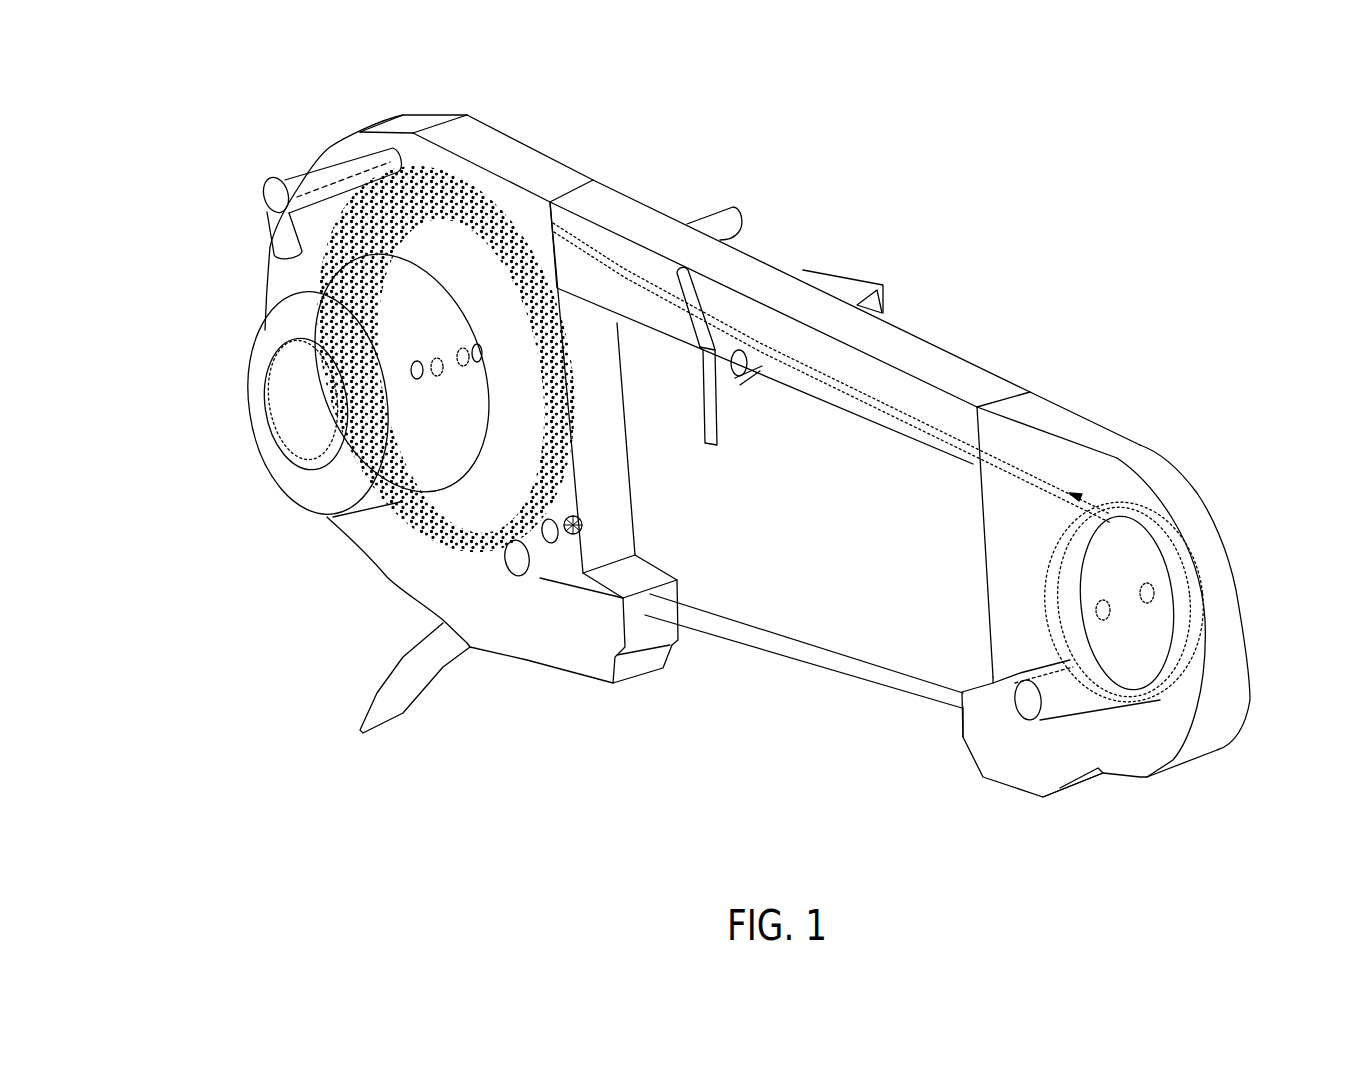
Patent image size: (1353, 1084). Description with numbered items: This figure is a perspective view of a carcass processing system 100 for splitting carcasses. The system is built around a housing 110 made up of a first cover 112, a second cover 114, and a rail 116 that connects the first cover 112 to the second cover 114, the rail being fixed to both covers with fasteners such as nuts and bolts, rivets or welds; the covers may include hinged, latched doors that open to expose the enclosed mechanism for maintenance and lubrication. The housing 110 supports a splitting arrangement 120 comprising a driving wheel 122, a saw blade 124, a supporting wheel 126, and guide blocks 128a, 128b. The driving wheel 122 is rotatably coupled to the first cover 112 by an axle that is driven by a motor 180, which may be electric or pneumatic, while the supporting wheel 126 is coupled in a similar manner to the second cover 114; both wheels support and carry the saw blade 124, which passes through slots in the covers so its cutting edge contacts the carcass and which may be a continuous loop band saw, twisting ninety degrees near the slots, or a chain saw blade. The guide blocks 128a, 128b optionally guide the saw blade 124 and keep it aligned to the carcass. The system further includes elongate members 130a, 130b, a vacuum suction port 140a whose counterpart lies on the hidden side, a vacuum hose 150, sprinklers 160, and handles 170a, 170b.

The carcass processing system 100 is at (224, 656).
The housing 110 is at (321, 138).
The first cover 112 is at (495, 133).
The second cover 114 is at (1032, 393).
The rail 116 is at (611, 191).
The splitting arrangement 120 is at (1112, 472).
The driving wheel 122 is at (577, 413).
The saw blade 124 is at (788, 640).
The supporting wheel 126 is at (1245, 592).
The guide block 128a is at (521, 582).
The guide block 128b is at (992, 687).
The elongate member 130a is at (716, 448).
The elongate member 130b is at (881, 287).
The vacuum suction port 140a is at (752, 380).
The vacuum hose 150 is at (373, 692).
The sprinklers 160 is at (584, 522).
The handle 170a is at (263, 195).
The handle 170b is at (738, 212).
The motor 180 is at (250, 359).